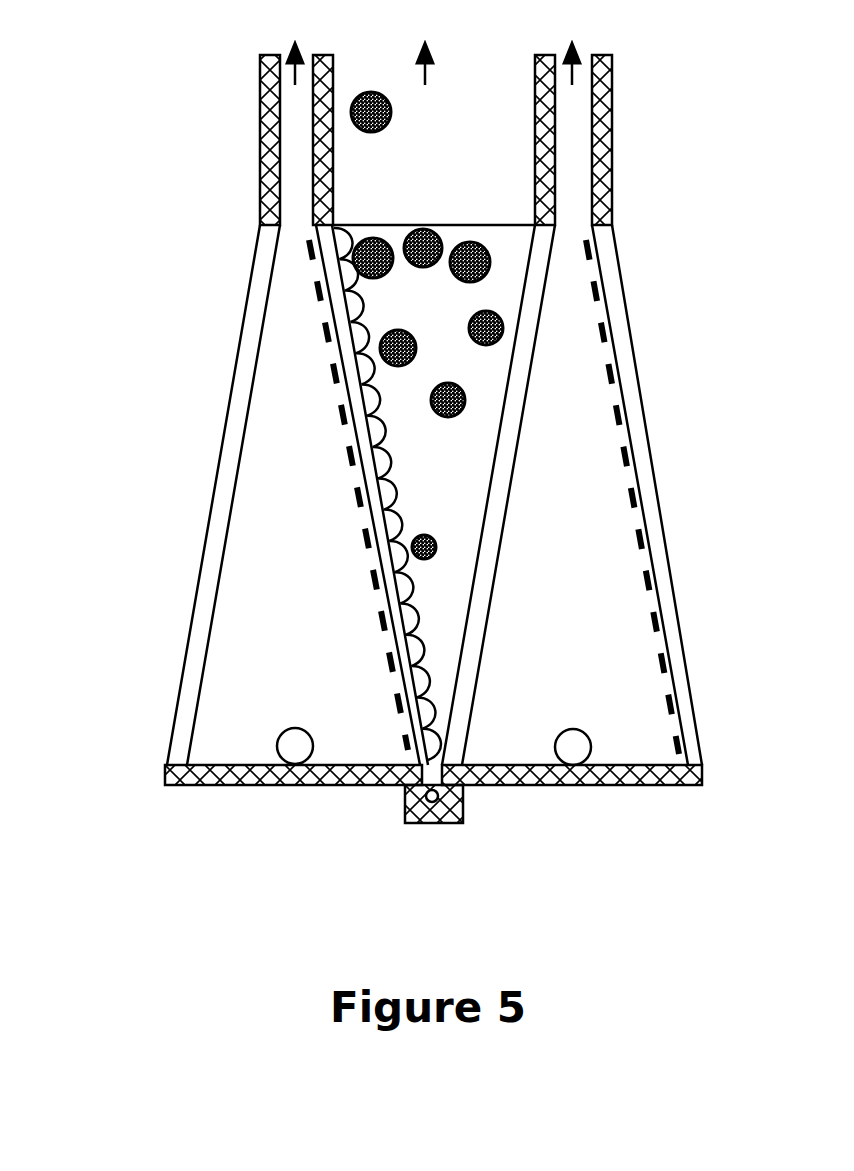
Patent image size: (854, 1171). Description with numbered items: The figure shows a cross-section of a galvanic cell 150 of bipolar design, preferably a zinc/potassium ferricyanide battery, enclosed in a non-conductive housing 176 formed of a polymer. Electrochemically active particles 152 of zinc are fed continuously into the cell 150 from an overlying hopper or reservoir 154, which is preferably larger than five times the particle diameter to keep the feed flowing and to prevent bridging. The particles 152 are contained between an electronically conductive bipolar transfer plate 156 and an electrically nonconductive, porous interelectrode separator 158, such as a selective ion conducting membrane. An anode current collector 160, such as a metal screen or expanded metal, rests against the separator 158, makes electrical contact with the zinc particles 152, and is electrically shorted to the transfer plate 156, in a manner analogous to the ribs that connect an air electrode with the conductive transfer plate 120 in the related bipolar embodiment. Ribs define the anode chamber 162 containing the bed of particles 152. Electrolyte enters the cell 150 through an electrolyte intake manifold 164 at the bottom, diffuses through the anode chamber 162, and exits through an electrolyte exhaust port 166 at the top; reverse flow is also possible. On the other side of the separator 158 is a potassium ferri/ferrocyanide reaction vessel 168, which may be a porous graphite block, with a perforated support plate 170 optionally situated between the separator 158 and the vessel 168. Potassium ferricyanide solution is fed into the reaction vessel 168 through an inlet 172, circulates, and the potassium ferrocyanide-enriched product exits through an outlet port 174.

The galvanic cell 150 is at (160, 260).
The conductive transfer plate 120 is at (190, 693).
The electrochemically active particles 152 is at (470, 262).
The hopper or reservoir 154 is at (400, 121).
The bipolar transfer plate 156 is at (518, 375).
The interelectrode separator 158 is at (348, 363).
The anode current collector 160 is at (360, 315).
The anode chamber 162 is at (439, 454).
The electrolyte intake manifold 164 is at (432, 800).
The electrolyte exhaust port 166 is at (426, 52).
The potassium ferri/ferrocyanide reaction vessel 168 is at (293, 462).
The perforated support plate 170 is at (326, 309).
The inlet 172 is at (295, 745).
The outlet port 174 is at (288, 122).
The non-conductive housing 176 is at (607, 150).